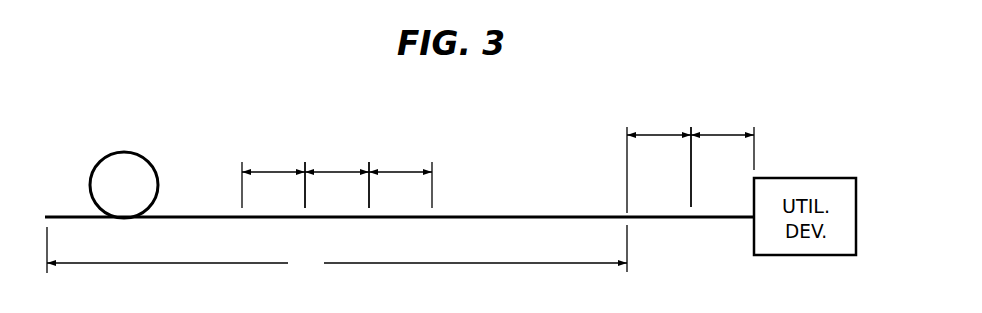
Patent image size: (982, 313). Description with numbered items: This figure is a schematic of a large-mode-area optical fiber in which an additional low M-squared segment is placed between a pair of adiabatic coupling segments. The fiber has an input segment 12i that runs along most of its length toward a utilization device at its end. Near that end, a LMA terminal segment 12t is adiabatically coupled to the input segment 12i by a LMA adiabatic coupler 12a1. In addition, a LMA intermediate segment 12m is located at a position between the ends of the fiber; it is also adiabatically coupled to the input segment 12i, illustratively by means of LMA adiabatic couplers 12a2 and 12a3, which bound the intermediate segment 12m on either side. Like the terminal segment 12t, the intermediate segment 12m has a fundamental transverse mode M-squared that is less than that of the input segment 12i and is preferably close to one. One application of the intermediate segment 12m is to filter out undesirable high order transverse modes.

The input segment 12i is at (337, 251).
The LMA adiabatic coupler 12a1 is at (657, 134).
The LMA adiabatic coupler 12a2 is at (271, 170).
The LMA adiabatic coupler 12a3 is at (397, 170).
The LMA intermediate segment 12m is at (334, 170).
The LMA terminal segment 12t is at (720, 134).